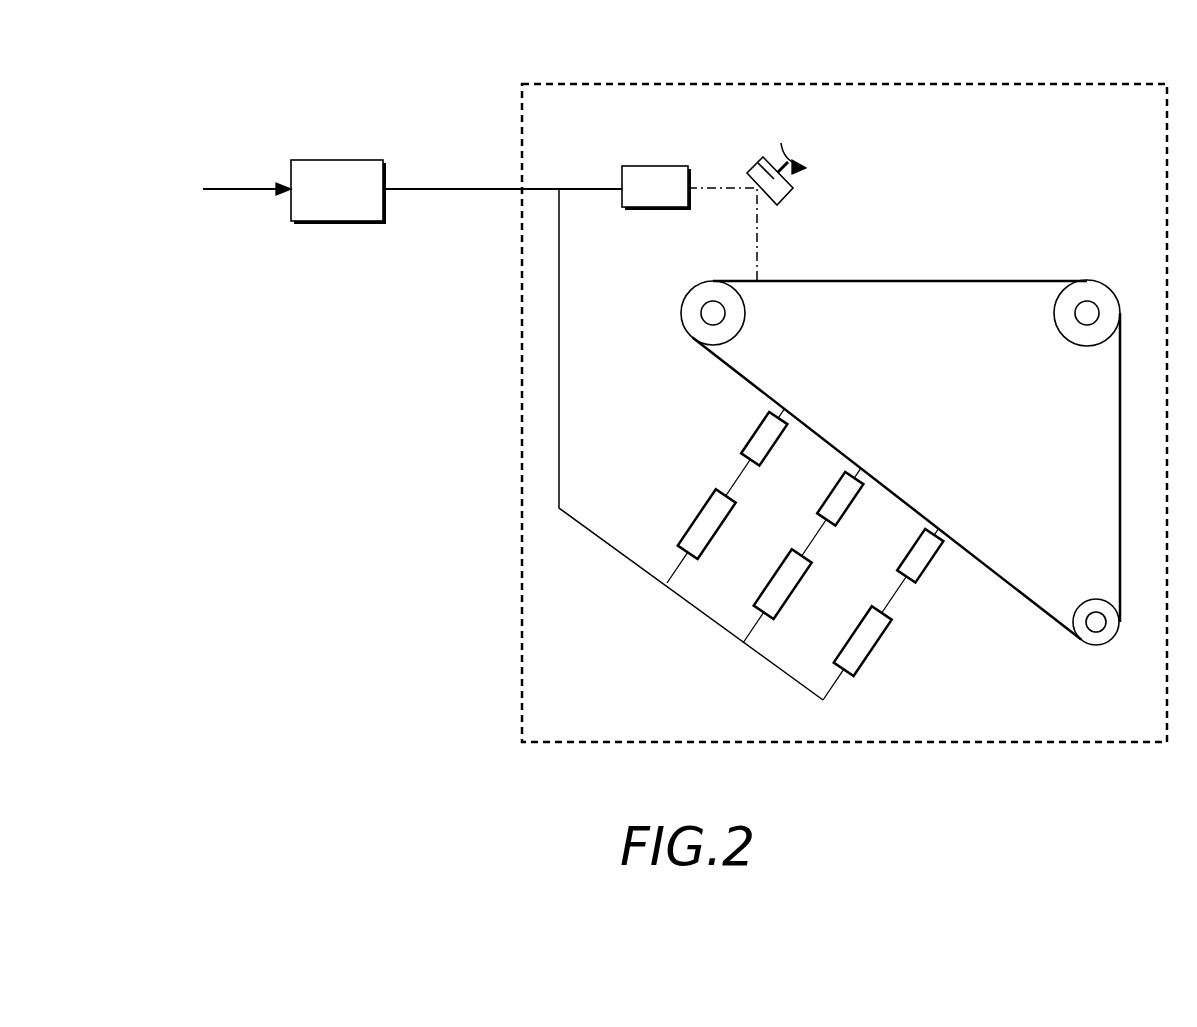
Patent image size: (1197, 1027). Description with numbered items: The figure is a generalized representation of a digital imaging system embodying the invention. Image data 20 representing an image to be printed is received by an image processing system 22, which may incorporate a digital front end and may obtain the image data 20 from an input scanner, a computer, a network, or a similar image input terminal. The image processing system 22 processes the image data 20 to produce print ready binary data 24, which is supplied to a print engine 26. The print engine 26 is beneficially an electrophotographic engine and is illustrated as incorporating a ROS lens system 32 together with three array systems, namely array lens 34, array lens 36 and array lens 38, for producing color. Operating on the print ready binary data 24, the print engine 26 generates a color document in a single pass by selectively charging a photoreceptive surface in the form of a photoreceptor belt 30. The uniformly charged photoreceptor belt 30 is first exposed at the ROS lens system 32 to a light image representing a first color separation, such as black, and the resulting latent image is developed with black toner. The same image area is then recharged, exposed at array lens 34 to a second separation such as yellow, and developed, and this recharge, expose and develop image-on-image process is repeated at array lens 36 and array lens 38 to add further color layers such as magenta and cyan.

The image data 20 is at (246, 191).
The image processing system 22 is at (355, 158).
The print ready binary data 24 is at (468, 185).
The print engine 26 is at (893, 82).
The photoreceptor belt 30 is at (959, 280).
The ROS lens system 32 is at (709, 188).
The array lens 34 is at (726, 493).
The array lens 36 is at (802, 553).
The array lens 38 is at (882, 610).